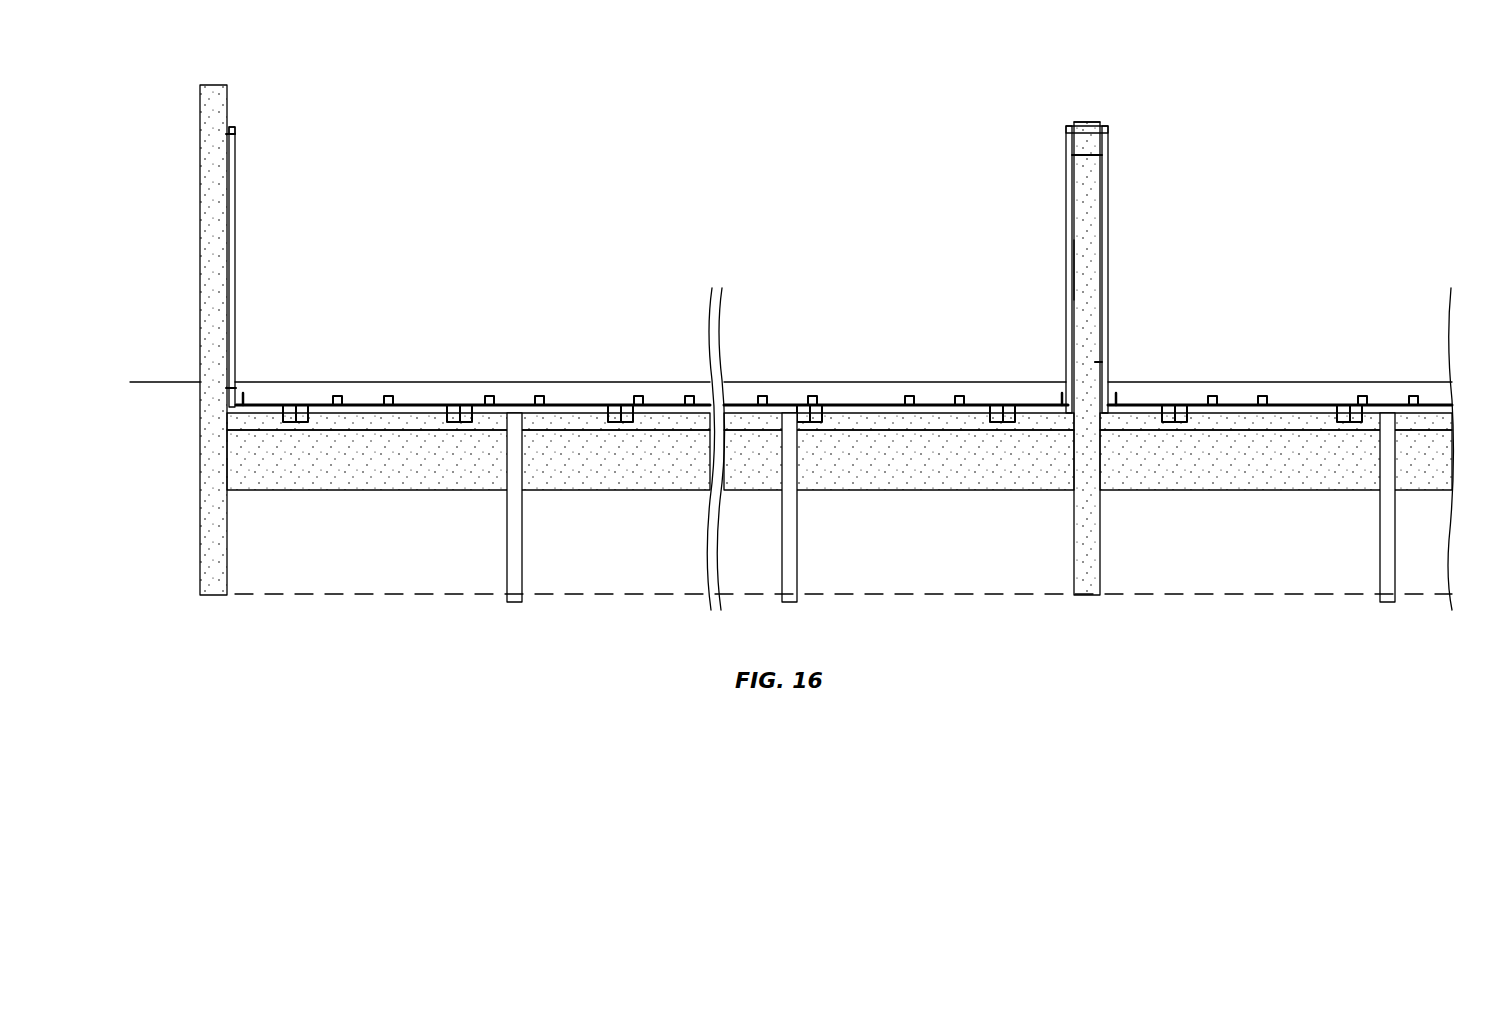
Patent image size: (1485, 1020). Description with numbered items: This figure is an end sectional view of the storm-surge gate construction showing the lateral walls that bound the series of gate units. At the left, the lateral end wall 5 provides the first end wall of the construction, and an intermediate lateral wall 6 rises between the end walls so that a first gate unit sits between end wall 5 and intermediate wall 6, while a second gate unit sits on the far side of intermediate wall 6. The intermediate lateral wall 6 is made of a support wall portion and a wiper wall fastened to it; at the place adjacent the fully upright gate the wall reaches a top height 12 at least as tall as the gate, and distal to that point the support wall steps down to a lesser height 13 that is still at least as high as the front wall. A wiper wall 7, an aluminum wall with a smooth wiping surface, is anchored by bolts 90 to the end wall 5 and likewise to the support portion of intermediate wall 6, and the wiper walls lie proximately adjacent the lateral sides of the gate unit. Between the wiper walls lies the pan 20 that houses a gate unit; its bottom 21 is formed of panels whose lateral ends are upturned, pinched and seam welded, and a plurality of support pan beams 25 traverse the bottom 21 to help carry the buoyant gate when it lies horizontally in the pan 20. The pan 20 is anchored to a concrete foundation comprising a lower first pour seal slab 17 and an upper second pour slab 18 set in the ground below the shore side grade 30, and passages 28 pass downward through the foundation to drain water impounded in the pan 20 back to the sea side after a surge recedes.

The lateral end wall 5 is at (212, 103).
The bolts 90 is at (224, 137).
The wiper wall 7 is at (237, 166).
The shore side grade 30 is at (151, 381).
The support pan beams 25 is at (388, 397).
The pan bottom 21 is at (735, 402).
The pan 20 is at (778, 316).
The second pour slab 18 is at (1040, 425).
The intermediate lateral wall 6 is at (1085, 315).
The lesser height 13 is at (1090, 268).
The top height 12 is at (1090, 122).
The first pour seal slab 17 is at (1044, 465).
The passages 28 is at (522, 554).